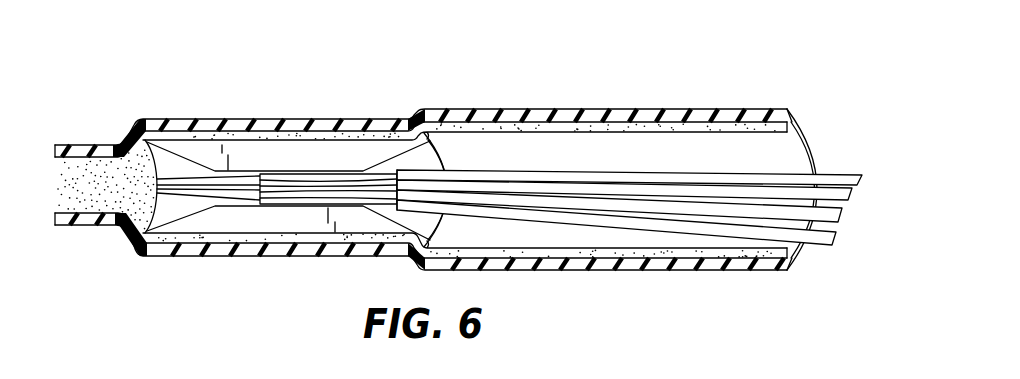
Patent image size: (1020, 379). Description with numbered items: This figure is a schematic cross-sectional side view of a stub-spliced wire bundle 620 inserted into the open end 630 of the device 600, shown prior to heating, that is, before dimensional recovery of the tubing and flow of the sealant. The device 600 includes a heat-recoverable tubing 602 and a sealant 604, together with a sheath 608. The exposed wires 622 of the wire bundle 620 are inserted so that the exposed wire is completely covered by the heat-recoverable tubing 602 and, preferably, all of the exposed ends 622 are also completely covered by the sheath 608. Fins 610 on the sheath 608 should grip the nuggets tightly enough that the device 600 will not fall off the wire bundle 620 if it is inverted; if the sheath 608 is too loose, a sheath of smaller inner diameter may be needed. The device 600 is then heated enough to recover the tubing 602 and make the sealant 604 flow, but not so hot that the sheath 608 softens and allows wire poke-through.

The device 600 is at (158, 72).
The heat-recoverable tubing 602 is at (640, 119).
The sealant 604 is at (617, 260).
The sheath 608 is at (156, 145).
The fins 610 is at (278, 155).
The wire bundle 620 is at (868, 175).
The exposed wires 622 is at (308, 160).
The open end 630 is at (772, 158).